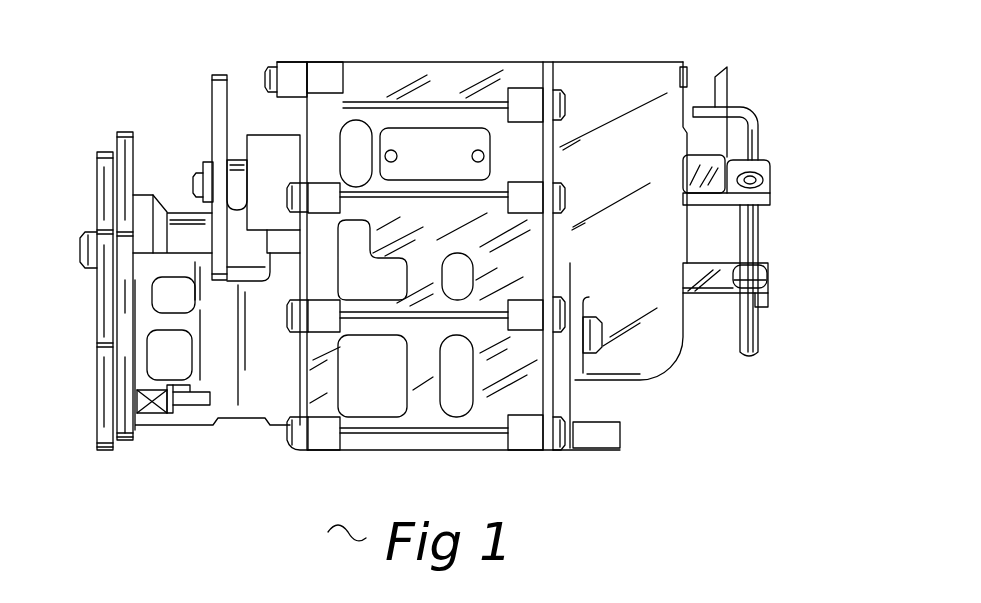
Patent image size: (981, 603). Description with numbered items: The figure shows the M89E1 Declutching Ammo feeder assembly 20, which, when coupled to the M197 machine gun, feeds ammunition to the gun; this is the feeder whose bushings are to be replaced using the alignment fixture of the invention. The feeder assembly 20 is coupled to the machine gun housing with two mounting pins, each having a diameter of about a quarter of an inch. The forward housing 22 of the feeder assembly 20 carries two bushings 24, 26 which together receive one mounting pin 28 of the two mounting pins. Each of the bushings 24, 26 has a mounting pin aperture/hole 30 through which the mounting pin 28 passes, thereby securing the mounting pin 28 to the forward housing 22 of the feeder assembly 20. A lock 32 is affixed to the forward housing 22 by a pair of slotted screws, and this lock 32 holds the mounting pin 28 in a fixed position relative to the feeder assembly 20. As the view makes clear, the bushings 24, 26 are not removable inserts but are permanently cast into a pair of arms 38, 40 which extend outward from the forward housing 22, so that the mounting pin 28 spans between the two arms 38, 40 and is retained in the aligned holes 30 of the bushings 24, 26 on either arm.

The feeder assembly 20 is at (309, 38).
The forward housing 22 is at (672, 368).
The bushing 24 is at (763, 163).
The bushing 26 is at (770, 272).
The mounting pin 28 is at (742, 110).
The mounting pin aperture/hole 30 is at (762, 265).
The lock 32 is at (721, 78).
The arm 38 is at (737, 206).
The arm 40 is at (686, 297).